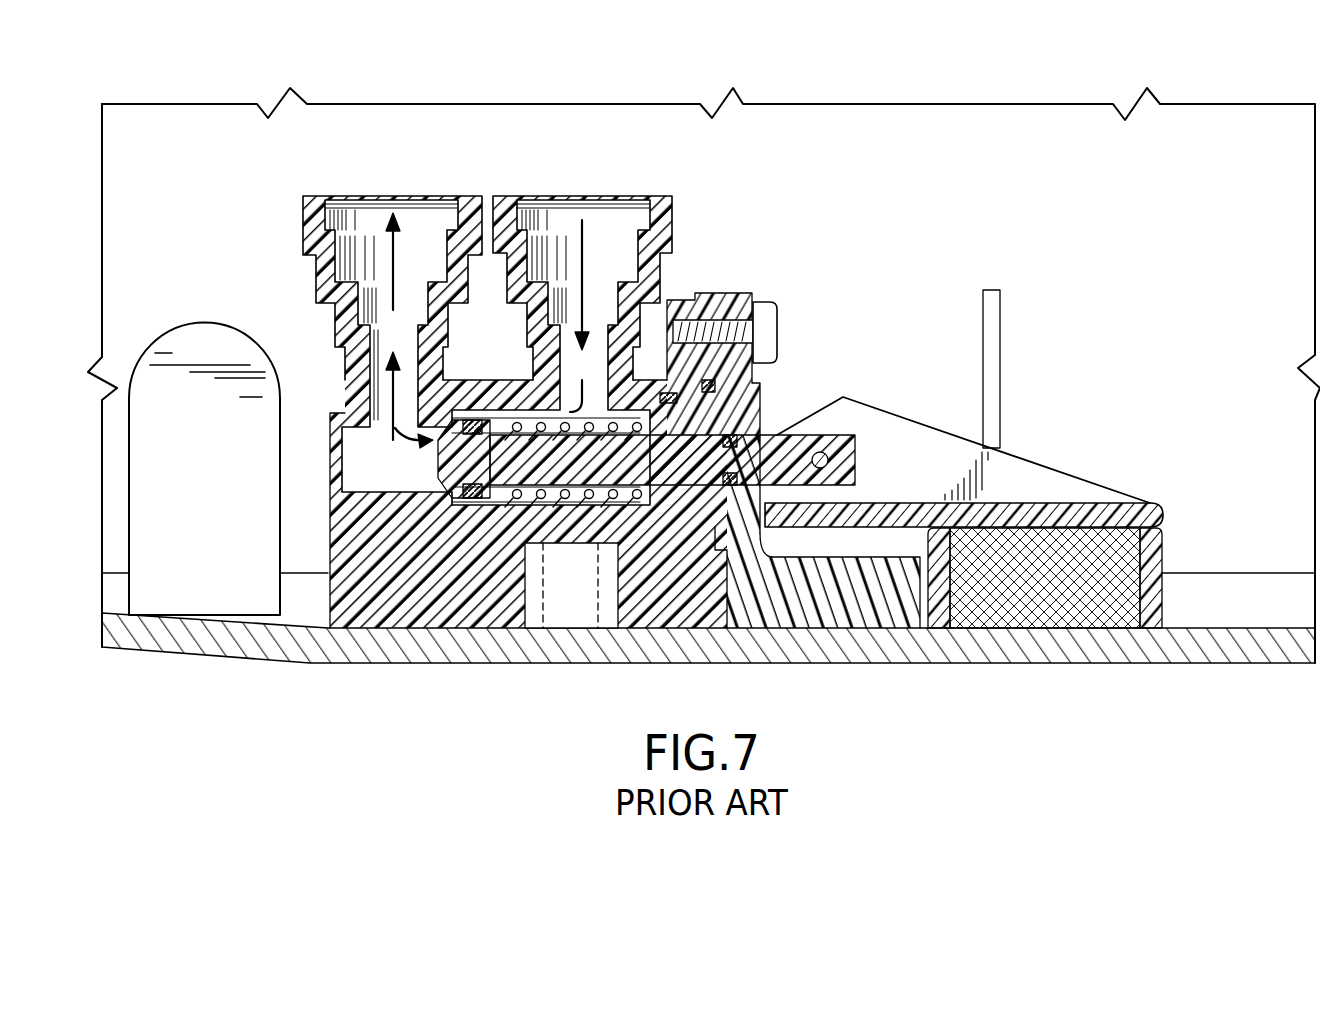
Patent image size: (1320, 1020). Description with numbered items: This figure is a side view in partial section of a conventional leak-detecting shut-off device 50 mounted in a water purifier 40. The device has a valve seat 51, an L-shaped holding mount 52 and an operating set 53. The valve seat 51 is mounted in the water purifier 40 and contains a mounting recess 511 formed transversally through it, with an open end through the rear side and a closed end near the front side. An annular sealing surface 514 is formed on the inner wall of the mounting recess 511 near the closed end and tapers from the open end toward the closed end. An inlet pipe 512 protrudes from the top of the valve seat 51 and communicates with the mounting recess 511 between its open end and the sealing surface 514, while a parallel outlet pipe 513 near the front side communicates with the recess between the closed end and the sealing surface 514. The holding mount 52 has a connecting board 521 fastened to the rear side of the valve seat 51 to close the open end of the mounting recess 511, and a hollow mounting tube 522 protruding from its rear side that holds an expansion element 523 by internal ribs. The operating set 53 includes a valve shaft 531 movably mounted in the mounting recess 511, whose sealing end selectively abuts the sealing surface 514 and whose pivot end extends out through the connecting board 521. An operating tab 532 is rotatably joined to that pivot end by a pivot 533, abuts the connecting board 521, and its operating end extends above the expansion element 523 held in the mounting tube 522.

The water purifier 40 is at (1143, 279).
The leak-detecting shut-off device 50 is at (787, 277).
The valve seat 51 is at (424, 612).
The holding mount 52 is at (877, 613).
The operating set 53 is at (964, 428).
The mounting recess 511 is at (352, 452).
The inlet pipe 512 is at (662, 202).
The outlet pipe 513 is at (463, 202).
The sealing surface 514 is at (442, 480).
The connecting board 521 is at (752, 368).
The mounting tube 522 is at (1162, 548).
The expansion element 523 is at (1048, 613).
The valve shaft 531 is at (682, 462).
The operating tab 532 is at (1058, 486).
The pivot 533 is at (828, 455).